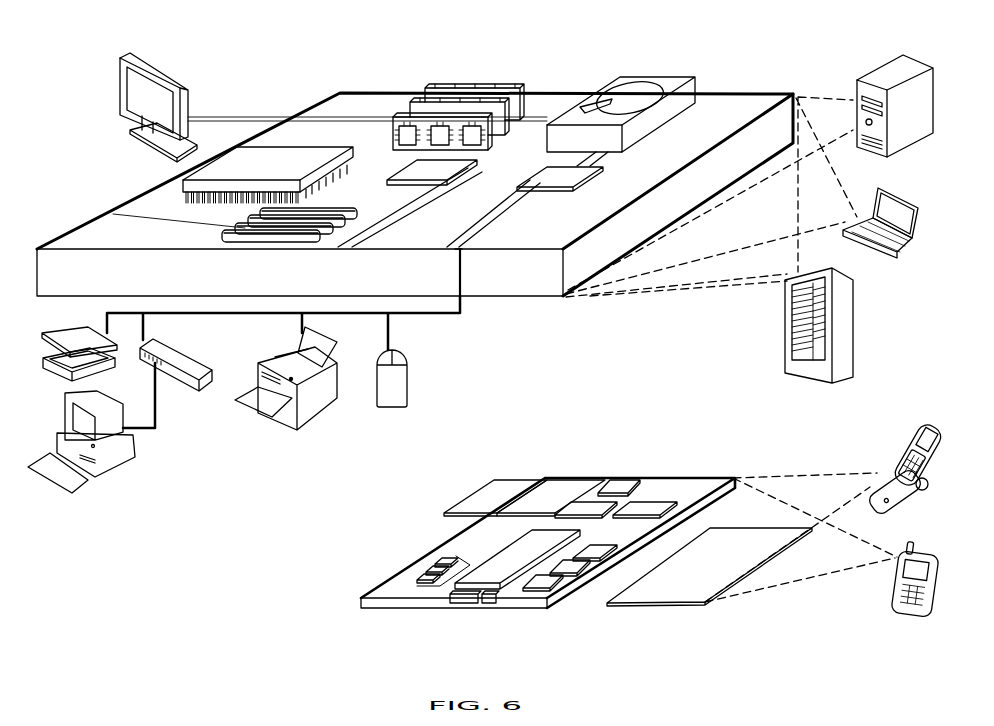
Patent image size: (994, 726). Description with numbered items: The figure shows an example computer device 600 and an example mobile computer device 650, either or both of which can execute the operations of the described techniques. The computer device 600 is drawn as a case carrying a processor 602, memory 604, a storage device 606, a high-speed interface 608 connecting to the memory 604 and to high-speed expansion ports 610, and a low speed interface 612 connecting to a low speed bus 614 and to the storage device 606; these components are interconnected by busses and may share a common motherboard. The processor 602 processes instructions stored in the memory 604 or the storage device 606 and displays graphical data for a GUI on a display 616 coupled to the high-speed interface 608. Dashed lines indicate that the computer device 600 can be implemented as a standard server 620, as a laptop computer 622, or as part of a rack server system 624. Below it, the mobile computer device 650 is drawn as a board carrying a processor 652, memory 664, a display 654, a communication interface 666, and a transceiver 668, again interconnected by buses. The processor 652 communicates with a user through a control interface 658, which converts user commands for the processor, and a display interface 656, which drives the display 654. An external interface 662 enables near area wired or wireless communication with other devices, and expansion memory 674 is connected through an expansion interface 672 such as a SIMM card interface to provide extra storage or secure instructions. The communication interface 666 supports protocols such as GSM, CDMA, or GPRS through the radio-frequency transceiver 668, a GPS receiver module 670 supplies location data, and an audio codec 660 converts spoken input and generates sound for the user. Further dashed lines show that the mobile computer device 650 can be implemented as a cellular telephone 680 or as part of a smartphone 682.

The computer device 600 is at (281, 64).
The processor 602 is at (180, 190).
The memory 604 is at (432, 88).
The storage device 606 is at (614, 78).
The high-speed interface 608 is at (378, 160).
The high-speed expansion ports 610 is at (237, 222).
The low speed interface 612 is at (549, 176).
The low speed bus 614 is at (466, 249).
The display 616 is at (120, 60).
The standard server 620 is at (857, 83).
The laptop computer 622 is at (879, 190).
The rack server system 624 is at (786, 345).
The mobile computer device 650 is at (531, 455).
The processor 652 is at (492, 600).
The display 654 is at (705, 605).
The display interface 656 is at (558, 591).
The control interface 658 is at (590, 576).
The audio codec 660 is at (598, 561).
The external interface 662 is at (471, 603).
The memory 664 is at (433, 572).
The communication interface 666 is at (585, 503).
The transceiver 668 is at (645, 503).
The GPS receiver module 670 is at (622, 492).
The expansion interface 672 is at (528, 487).
The expansion memory 674 is at (474, 487).
The cellular telephone 680 is at (916, 436).
The smartphone 682 is at (901, 541).